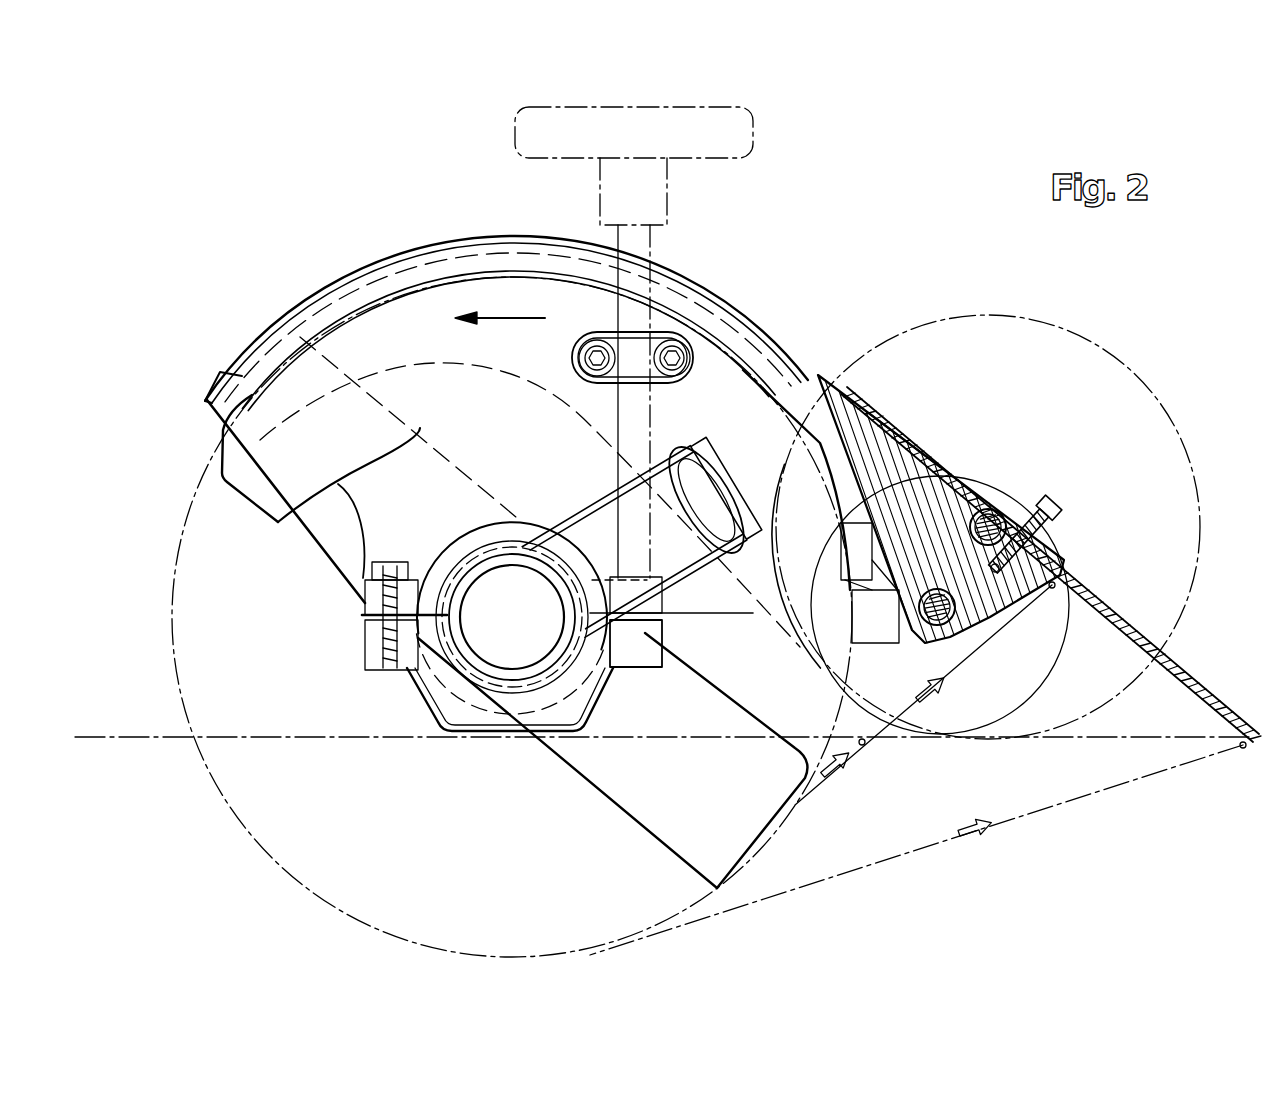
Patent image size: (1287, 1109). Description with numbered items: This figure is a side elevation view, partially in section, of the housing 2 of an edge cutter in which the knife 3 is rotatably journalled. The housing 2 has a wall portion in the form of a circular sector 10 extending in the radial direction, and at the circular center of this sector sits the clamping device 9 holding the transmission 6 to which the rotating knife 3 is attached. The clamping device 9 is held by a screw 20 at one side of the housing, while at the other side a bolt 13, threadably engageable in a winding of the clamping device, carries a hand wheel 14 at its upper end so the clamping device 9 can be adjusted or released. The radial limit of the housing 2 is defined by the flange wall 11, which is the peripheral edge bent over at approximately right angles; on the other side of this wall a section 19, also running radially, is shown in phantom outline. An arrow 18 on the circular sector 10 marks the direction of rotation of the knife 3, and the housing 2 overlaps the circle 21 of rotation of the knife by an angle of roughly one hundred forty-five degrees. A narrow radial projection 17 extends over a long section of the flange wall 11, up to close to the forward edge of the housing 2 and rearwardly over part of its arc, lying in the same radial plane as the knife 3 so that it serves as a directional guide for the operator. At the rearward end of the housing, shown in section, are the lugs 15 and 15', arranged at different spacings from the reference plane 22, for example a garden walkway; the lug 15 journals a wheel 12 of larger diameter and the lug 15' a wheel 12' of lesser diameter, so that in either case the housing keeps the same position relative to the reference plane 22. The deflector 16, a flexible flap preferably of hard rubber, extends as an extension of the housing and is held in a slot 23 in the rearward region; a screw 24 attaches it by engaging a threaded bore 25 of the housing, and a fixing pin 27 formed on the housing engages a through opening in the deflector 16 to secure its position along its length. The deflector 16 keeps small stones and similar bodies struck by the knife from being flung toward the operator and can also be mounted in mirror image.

The housing 2 is at (375, 248).
The knife 3 is at (262, 486).
The transmission 6 is at (603, 667).
The clamping device 9 is at (447, 705).
The circular sector 10 is at (280, 518).
The flange wall 11 is at (207, 400).
The wheel 12 is at (997, 527).
The wheel of lesser diameter 12' is at (968, 605).
The bolt 13 is at (643, 407).
The hand wheel 14 is at (742, 140).
The lug 15 is at (1004, 470).
The lug 15' is at (975, 648).
The deflector 16 is at (1198, 673).
The radial projection 17 is at (293, 300).
The arrow 18 is at (520, 318).
The section 19 is at (443, 365).
The screw 20 is at (365, 570).
The circle of rotation 21 is at (175, 570).
The reference plane 22 is at (92, 737).
The slot 23 is at (894, 422).
The screw 24 is at (1047, 505).
The threaded bore 25 is at (1013, 577).
The fixing pin 27 is at (919, 453).